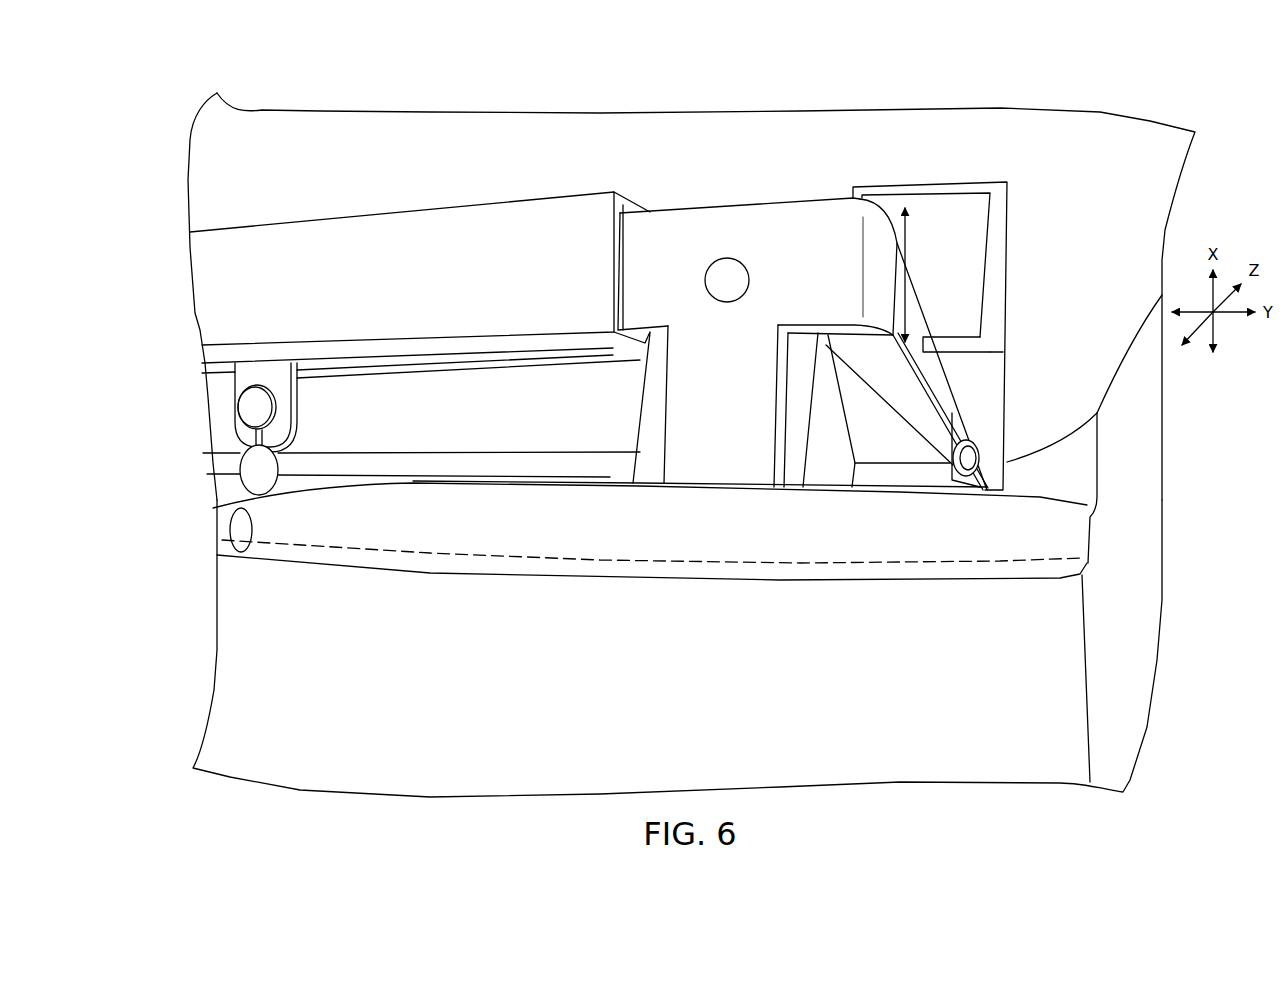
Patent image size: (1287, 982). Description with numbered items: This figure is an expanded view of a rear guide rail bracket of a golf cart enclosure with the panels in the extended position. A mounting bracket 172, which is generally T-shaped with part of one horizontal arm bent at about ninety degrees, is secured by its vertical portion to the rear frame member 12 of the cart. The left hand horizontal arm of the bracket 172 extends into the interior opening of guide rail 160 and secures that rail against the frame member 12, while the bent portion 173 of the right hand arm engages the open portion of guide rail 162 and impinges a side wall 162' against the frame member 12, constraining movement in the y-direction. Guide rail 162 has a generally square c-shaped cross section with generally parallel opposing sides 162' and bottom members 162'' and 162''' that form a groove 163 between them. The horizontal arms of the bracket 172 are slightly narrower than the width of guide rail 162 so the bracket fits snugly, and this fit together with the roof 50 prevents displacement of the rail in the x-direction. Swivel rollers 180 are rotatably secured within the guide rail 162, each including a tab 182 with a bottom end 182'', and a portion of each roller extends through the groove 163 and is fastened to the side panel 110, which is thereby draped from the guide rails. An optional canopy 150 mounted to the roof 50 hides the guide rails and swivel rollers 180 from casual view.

The roof 50 is at (493, 125).
The side panel 110 is at (435, 783).
The canopy 150 is at (1147, 432).
The guide rail 160 is at (208, 288).
The frame member 12 is at (650, 418).
The mounting bracket 172 is at (723, 217).
The bent portion 173 is at (873, 225).
The guide rail 162 is at (978, 336).
The side 162' is at (982, 366).
The bottom member 162'' is at (1022, 378).
The bottom member 162''' is at (876, 410).
The groove 163 is at (922, 363).
The swivel roller 180 is at (226, 413).
The tab 182 is at (607, 450).
The bottom end 182'' is at (632, 500).